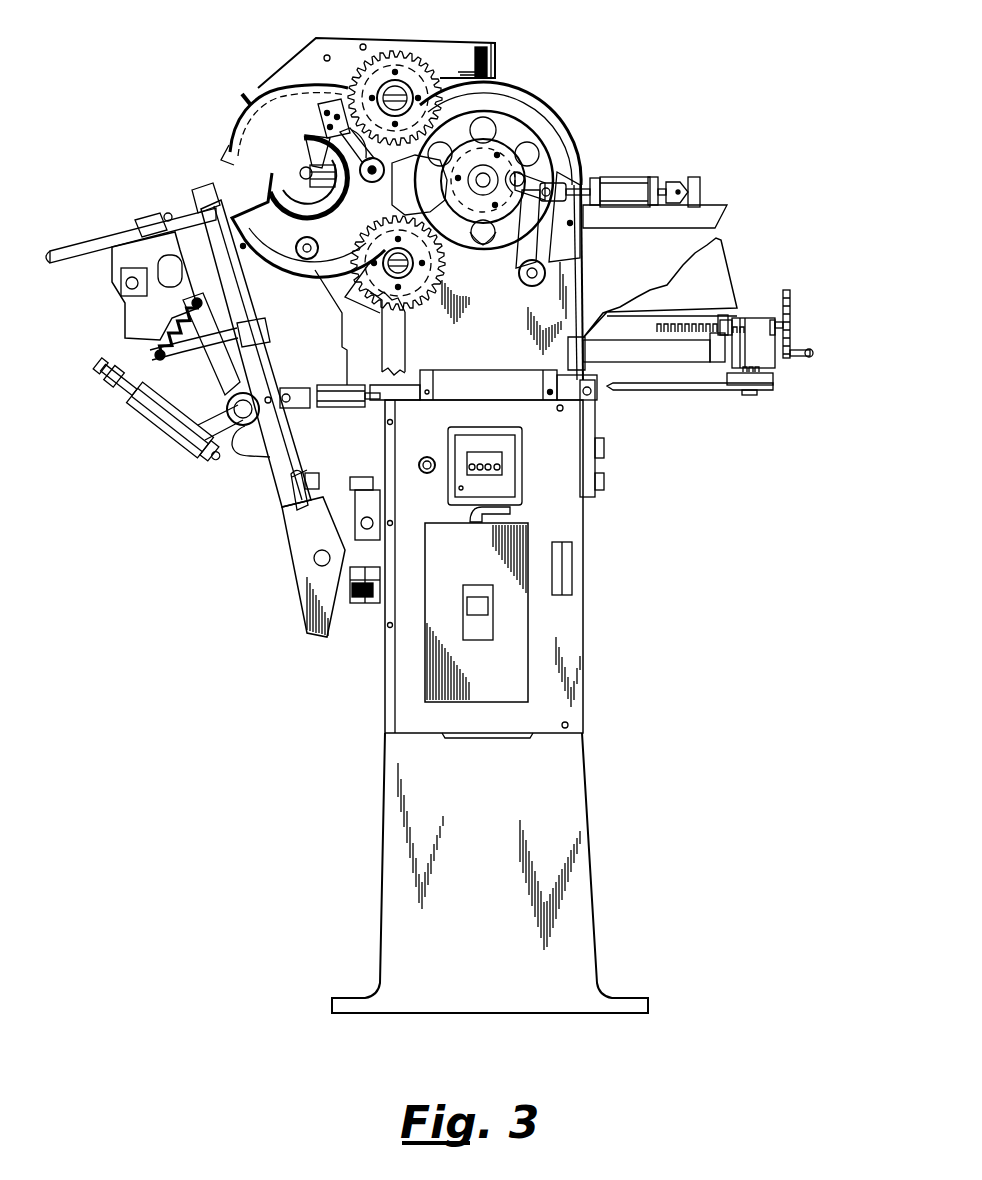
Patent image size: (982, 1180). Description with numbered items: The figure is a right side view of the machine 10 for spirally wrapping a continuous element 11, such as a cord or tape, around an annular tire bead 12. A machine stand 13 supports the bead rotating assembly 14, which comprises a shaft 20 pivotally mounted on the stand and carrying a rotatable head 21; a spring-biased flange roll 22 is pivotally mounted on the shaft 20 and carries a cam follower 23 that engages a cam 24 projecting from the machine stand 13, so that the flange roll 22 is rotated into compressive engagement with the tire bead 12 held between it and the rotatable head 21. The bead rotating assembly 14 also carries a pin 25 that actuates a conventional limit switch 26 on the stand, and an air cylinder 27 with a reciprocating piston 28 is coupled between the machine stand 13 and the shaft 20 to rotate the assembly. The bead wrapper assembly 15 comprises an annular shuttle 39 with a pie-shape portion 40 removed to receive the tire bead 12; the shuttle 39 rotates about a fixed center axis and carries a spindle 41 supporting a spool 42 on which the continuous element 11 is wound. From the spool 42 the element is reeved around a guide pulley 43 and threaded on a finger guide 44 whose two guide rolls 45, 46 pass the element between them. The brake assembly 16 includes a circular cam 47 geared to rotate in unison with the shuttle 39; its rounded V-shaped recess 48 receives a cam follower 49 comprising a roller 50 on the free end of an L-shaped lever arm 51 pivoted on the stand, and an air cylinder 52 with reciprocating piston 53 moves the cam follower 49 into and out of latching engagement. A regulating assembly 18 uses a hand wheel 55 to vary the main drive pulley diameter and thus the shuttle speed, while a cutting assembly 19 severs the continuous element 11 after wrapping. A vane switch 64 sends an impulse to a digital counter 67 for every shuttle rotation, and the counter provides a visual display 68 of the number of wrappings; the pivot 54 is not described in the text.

The machine 10 is at (578, 97).
The continuous element 11 is at (366, 158).
The tire bead 12 is at (82, 245).
The machine stand 13 is at (592, 800).
The bead rotating assembly 14 is at (127, 316).
The bead wrapper assembly 15 is at (244, 98).
The brake assembly 16 is at (660, 162).
The speed regulating assembly 18 is at (716, 312).
The cutting assembly 19 is at (302, 186).
The shaft 20 is at (246, 294).
The rotatable head 21 is at (196, 204).
The flange roll 22 is at (142, 215).
The cam follower 23 is at (212, 463).
The cam 24 is at (247, 458).
The pin 25 is at (310, 478).
The limit switch 26 is at (360, 477).
The air cylinder 27 is at (488, 370).
The reciprocating piston 28 is at (300, 388).
The shuttle 39 is at (226, 153).
The pie-shape portion 40 is at (232, 128).
The spindle 41 is at (296, 246).
The spool 42 is at (308, 252).
The guide pulley 43 is at (392, 198).
The finger guide 44 is at (303, 152).
The guide roll 45 is at (300, 182).
The guide roll 46 is at (306, 158).
The circular cam 47 is at (503, 128).
The V-shaped recess 48 is at (486, 263).
The cam follower 49 is at (578, 243).
The roller 50 is at (530, 172).
The L-shaped lever arm 51 is at (546, 246).
The air cylinder 52 is at (645, 177).
The reciprocating piston 53 is at (700, 182).
The clevis 54 is at (560, 185).
The hand wheel 55 is at (790, 306).
The vane switch 64 is at (426, 473).
The digital counter 67 is at (525, 450).
The visual display 68 is at (500, 466).